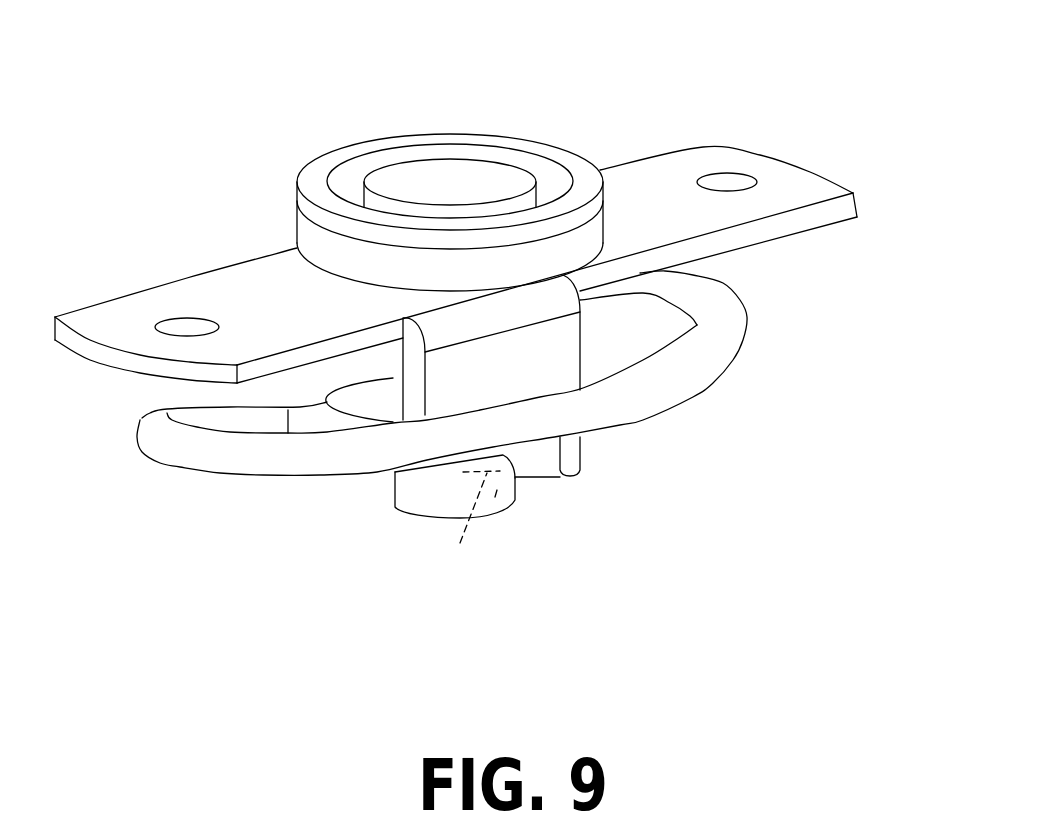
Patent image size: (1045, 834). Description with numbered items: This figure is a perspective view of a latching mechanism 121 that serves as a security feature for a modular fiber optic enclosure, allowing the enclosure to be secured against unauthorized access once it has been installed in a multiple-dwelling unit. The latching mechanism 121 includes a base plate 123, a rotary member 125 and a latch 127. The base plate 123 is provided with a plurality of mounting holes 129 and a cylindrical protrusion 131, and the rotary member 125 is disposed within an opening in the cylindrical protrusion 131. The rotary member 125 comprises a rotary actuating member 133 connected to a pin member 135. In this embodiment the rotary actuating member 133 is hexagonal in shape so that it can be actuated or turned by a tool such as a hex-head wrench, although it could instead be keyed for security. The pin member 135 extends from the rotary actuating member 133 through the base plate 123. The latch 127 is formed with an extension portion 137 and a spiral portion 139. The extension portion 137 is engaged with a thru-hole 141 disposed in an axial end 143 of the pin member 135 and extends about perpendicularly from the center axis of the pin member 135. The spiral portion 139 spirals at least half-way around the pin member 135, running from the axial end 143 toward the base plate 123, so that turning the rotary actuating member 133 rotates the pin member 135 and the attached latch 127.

The latching mechanism 121 is at (160, 117).
The base plate 123 is at (675, 170).
The rotary member 125 is at (425, 180).
The latch 127 is at (783, 318).
The mounting holes 129 is at (745, 185).
The cylindrical protrusion 131 is at (297, 213).
The rotary actuating member 133 is at (477, 187).
The pin member 135 is at (393, 507).
The extension portion 137 is at (545, 472).
The spiral portion 139 is at (640, 395).
The thru-hole 141 is at (446, 525).
The axial end 143 is at (495, 495).